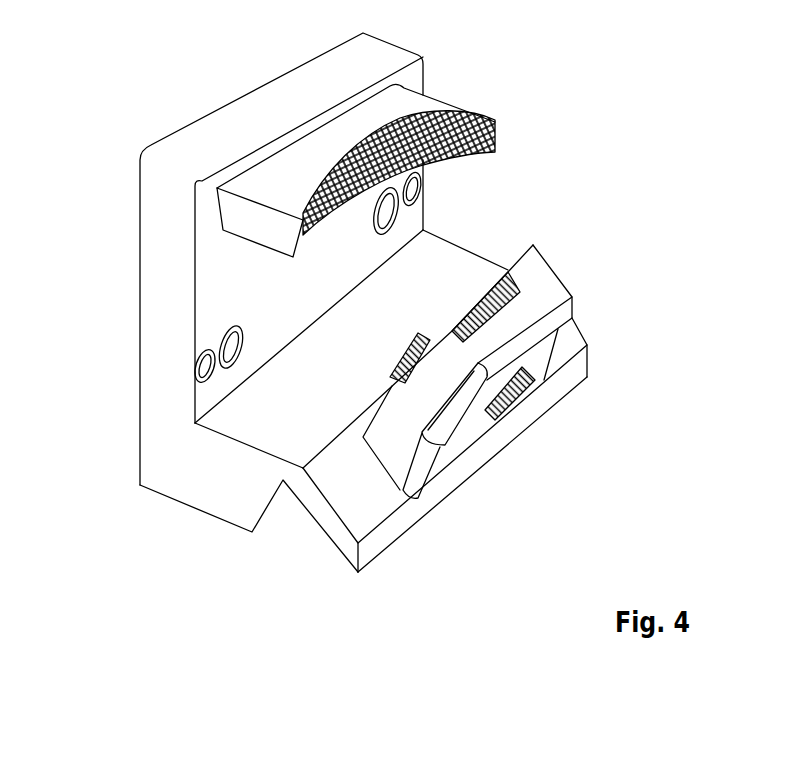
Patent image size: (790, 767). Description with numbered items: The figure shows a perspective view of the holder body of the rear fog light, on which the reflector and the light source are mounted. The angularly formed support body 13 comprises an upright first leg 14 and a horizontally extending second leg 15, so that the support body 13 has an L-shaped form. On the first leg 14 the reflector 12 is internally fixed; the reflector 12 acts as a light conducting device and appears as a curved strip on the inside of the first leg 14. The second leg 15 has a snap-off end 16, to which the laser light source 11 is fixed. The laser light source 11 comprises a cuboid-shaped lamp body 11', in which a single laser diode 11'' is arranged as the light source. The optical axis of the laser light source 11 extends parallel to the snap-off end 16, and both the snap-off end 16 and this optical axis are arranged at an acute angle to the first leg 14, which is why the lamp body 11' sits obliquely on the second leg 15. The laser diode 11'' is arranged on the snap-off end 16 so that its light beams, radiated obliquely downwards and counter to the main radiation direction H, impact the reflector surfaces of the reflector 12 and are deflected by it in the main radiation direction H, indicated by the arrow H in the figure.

The laser light source 11 is at (495, 371).
The lamp body 11' is at (554, 345).
The laser diode 11'' is at (516, 277).
The reflector 12 is at (482, 126).
The support body 13 is at (149, 380).
The first leg 14 is at (156, 286).
The second leg 15 is at (235, 487).
The snap-off end 16 is at (350, 551).
The main radiation direction H is at (637, 222).